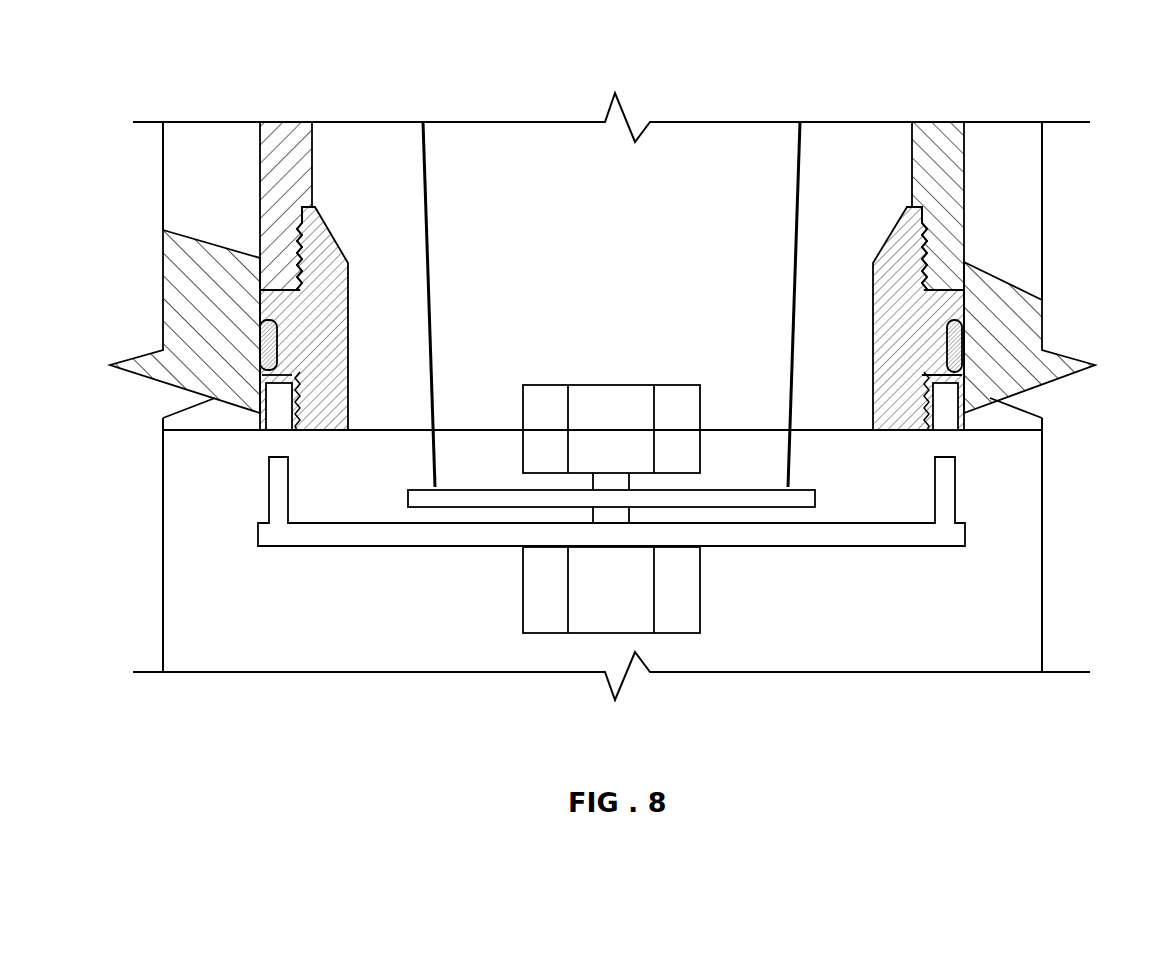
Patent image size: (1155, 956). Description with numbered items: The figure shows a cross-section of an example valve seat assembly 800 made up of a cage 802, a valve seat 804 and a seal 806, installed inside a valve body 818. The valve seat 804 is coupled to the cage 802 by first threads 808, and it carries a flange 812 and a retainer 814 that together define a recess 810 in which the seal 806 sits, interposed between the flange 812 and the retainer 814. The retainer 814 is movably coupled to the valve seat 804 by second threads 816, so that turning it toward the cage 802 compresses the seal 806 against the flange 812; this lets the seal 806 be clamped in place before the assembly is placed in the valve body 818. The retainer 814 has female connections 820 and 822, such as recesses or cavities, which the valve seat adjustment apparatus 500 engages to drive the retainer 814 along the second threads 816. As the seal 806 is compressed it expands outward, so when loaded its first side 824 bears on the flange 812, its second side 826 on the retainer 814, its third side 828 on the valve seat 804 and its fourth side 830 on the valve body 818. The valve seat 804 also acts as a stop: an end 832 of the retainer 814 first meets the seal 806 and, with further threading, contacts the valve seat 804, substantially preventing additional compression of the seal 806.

The valve seat adjustment apparatus 500 is at (740, 586).
The valve seat assembly 800 is at (1003, 230).
The cage 802 is at (950, 122).
The valve seat 804 is at (337, 280).
The seal 806 is at (953, 345).
The first threads 808 is at (925, 226).
The recess 810 is at (990, 398).
The flange 812 is at (165, 237).
The retainer 814 is at (262, 421).
The second threads 816 is at (300, 386).
The valve body 818 is at (222, 138).
The female connection 820 is at (278, 433).
The female connection 822 is at (948, 412).
The first side 824 is at (300, 288).
The second side 826 is at (260, 380).
The third side 828 is at (277, 345).
The fourth side 830 is at (260, 343).
The end 832 is at (932, 362).